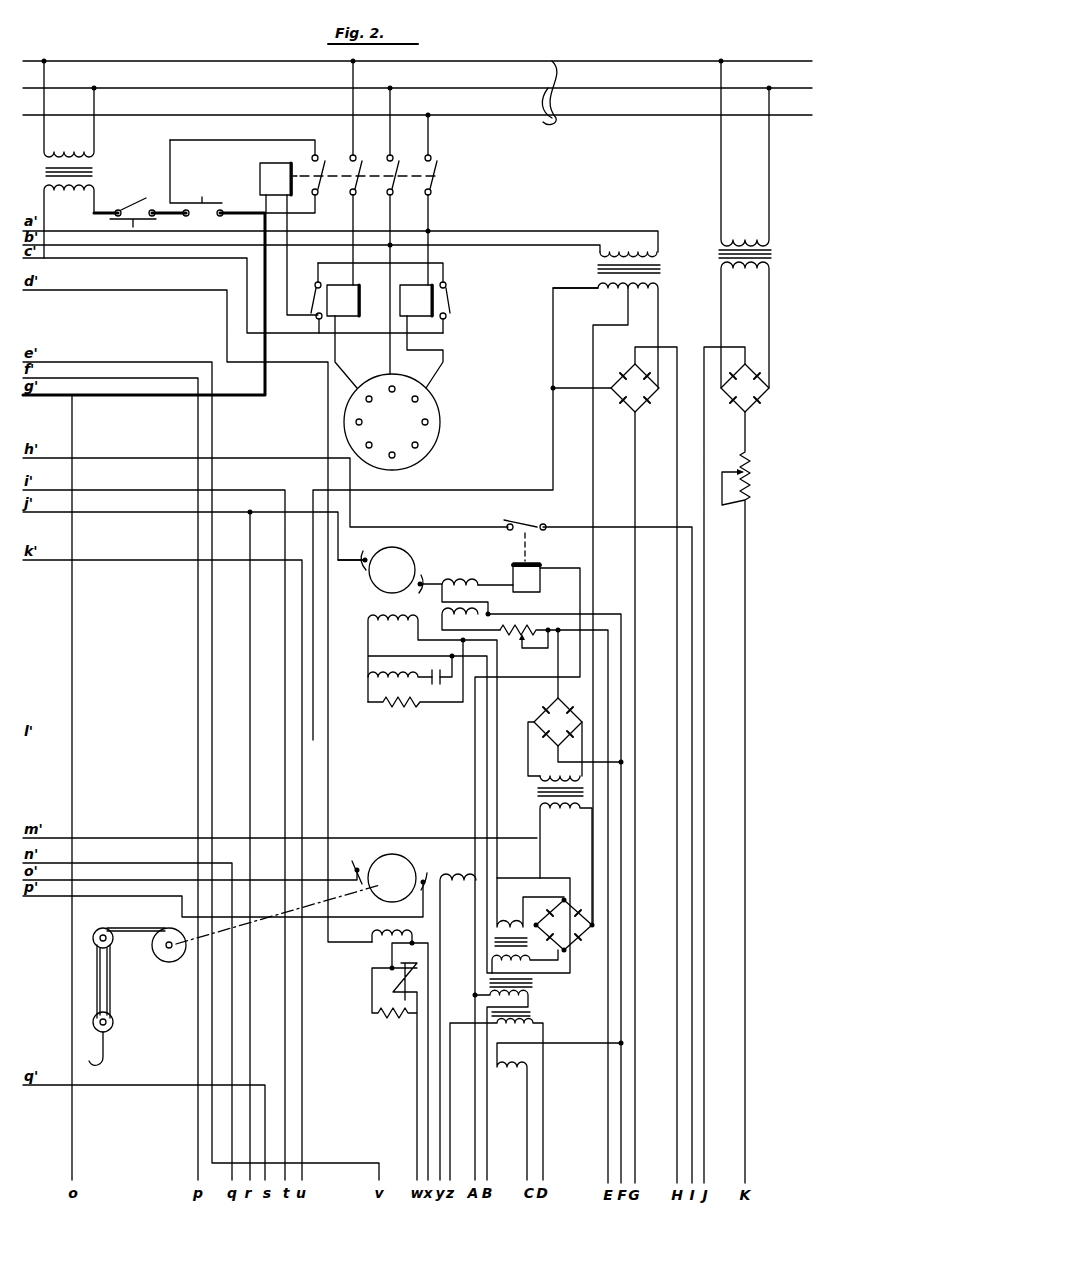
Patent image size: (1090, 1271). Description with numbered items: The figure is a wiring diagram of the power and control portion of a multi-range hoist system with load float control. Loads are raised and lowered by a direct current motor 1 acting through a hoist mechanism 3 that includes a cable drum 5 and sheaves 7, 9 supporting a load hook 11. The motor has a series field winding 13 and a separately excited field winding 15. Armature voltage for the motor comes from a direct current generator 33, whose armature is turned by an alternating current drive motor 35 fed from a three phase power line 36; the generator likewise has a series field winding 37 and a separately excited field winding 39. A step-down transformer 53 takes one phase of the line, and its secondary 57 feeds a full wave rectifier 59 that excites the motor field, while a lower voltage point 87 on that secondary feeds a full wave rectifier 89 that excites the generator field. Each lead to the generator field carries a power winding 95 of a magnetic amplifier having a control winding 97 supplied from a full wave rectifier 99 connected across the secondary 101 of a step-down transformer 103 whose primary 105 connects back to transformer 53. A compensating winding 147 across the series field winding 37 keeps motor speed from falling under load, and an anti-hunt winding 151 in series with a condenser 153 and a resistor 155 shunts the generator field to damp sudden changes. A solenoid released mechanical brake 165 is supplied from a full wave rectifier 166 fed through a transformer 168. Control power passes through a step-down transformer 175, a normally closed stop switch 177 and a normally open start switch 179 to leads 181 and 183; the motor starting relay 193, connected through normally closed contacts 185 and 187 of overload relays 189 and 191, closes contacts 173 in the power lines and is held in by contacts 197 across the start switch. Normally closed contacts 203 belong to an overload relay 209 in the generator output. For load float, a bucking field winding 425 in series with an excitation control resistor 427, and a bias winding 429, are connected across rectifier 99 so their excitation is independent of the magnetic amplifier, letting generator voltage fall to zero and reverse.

The motor 1 is at (398, 890).
The hoist mechanism 3 is at (133, 976).
The cable drum 5 is at (171, 950).
The sheave 7 is at (99, 929).
The sheave 9 is at (114, 1020).
The load hook 11 is at (107, 1060).
The series field winding 13 is at (462, 878).
The separately excited field winding 15 is at (372, 934).
The direct current generator 33 is at (403, 579).
The alternating current drive motor 35 is at (404, 431).
The three phase power line 36 is at (557, 99).
The series field winding 37 is at (457, 583).
The separately excited field winding 39 is at (370, 617).
The step-down transformer 53 is at (585, 278).
The transformer secondary 57 is at (660, 286).
The full wave rectifier 59 is at (645, 396).
The lower voltage point 87 is at (630, 291).
The full wave rectifier 89 is at (575, 933).
The power winding 95 is at (470, 962).
The control winding 97 is at (516, 1028).
The full wave rectifier 99 is at (568, 731).
The secondary 101 is at (556, 768).
The step-down transformer 103 is at (533, 800).
The primary 105 is at (549, 814).
The compensating winding 147 is at (528, 994).
The anti-hunt winding 151 is at (368, 675).
The condenser 153 is at (436, 688).
The resistor 155 is at (397, 708).
The mechanical brake 165 is at (372, 975).
The full wave rectifier 166 is at (757, 396).
The step-down transformer 168 is at (806, 255).
The normally open contacts 173 is at (356, 156).
The step-down transformer 175 is at (124, 165).
The stop switch 177 is at (133, 205).
The start switch 179 is at (204, 203).
The control power lead 181 is at (265, 273).
The control power lead 183 is at (44, 212).
The normally closed contacts 185 is at (322, 284).
The normally closed contacts 187 is at (447, 283).
The overload relay 189 is at (355, 309).
The overload relay 191 is at (428, 309).
The motor starting relay 193 is at (287, 187).
The normally open contacts 197 is at (318, 156).
The normally closed contacts 203 is at (523, 521).
The overload relay 209 is at (538, 589).
The bucking field winding 425 is at (442, 612).
The excitation control resistor 427 is at (554, 904).
The control or bias winding 429 is at (510, 1068).